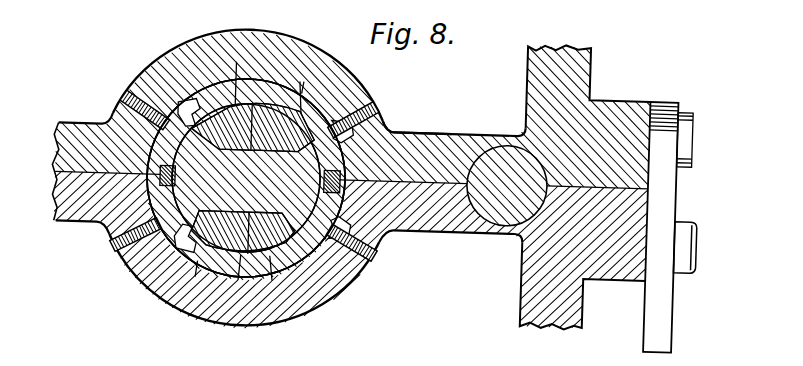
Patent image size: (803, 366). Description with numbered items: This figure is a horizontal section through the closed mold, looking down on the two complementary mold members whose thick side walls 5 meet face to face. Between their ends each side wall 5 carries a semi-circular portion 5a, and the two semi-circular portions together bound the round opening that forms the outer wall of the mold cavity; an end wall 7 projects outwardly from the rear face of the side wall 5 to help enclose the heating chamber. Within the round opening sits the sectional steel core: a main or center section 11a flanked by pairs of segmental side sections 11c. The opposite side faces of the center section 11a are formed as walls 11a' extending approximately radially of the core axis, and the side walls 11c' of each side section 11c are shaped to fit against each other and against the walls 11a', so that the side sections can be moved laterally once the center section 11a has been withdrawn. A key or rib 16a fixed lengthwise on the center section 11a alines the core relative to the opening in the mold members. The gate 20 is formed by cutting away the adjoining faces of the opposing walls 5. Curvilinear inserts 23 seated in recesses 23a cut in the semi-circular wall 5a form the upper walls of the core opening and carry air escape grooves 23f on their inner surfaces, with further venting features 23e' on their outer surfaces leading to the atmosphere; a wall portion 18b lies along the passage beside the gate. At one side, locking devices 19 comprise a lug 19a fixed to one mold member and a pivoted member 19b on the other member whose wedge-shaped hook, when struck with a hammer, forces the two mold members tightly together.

The side wall 5 is at (63, 125).
The semi-circular portion 5a is at (321, 318).
The end wall 7 is at (590, 78).
The main or center section 11a is at (246, 178).
The walls of center section 11a' is at (262, 178).
The segmental section 11c is at (251, 177).
The side walls of side core section 11c' is at (245, 177).
The key or rib 16a is at (364, 190).
The casing passage wall 18b is at (417, 121).
The locking devices 19 is at (677, 159).
The lug or projection 19a is at (697, 245).
The pivoted latching member 19b is at (671, 305).
The gate 20 is at (500, 148).
The insert 23 is at (266, 93).
The recess 23a is at (190, 95).
The seat ring segment 23e' is at (245, 177).
The air escape grooves 23f is at (272, 286).